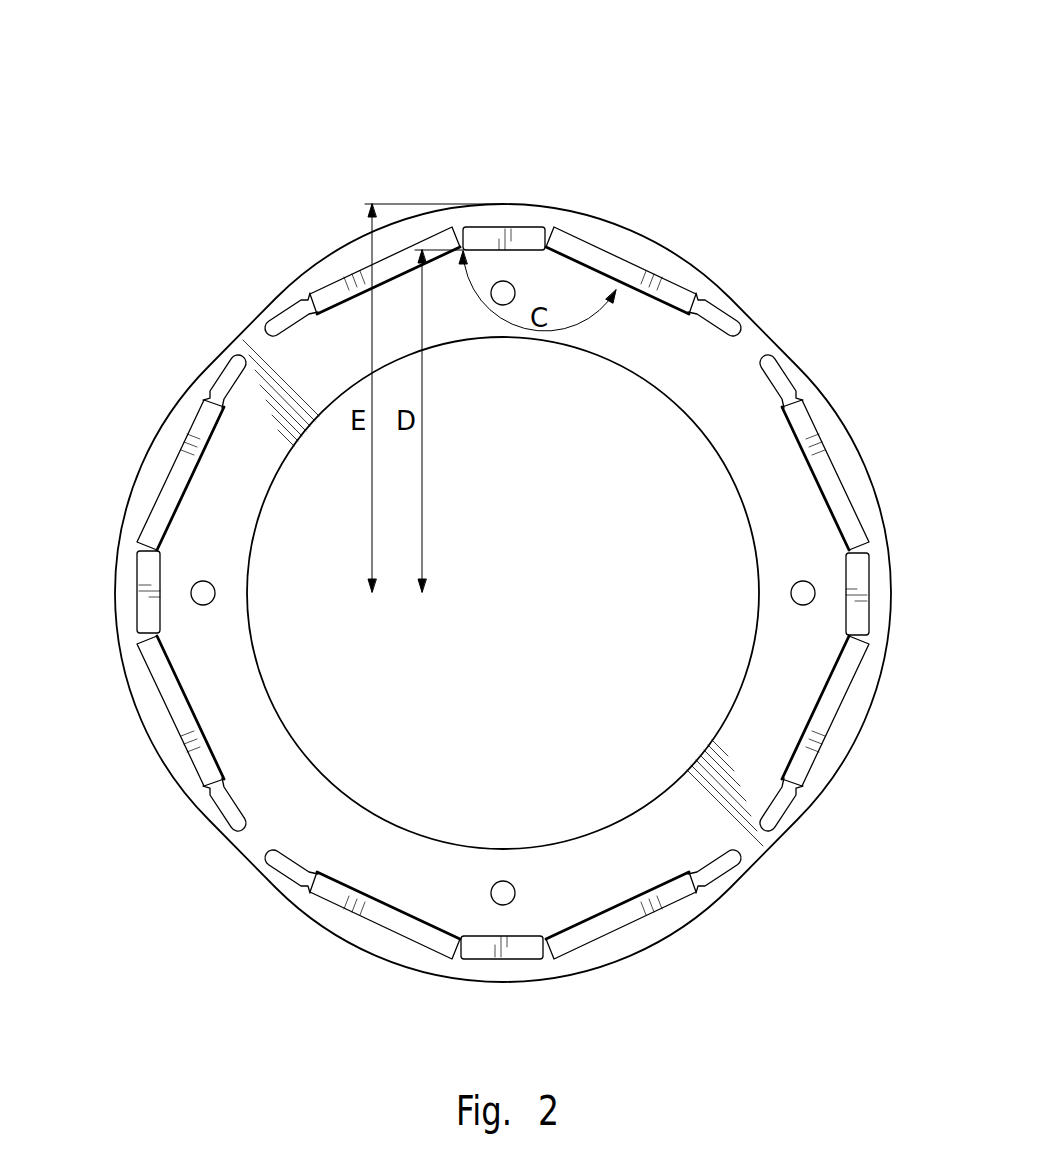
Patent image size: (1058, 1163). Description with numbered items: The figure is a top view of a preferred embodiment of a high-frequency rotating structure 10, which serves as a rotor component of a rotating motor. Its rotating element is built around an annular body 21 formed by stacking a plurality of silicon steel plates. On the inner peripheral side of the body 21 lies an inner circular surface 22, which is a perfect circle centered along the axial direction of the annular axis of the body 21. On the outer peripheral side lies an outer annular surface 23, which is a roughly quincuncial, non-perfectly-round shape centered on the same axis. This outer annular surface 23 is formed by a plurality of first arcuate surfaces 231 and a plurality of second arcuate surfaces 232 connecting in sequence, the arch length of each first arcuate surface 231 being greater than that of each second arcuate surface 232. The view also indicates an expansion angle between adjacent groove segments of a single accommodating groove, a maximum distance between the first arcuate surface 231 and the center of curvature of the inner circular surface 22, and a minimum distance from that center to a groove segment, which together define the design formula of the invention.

The high-frequency rotating structure 10 is at (866, 1063).
The annular body 21 is at (737, 362).
The inner circular surface 22 is at (713, 444).
The outer annular surface 23 is at (467, 483).
The first arcuate surface 231 is at (509, 206).
The second arcuate surface 232 is at (243, 333).